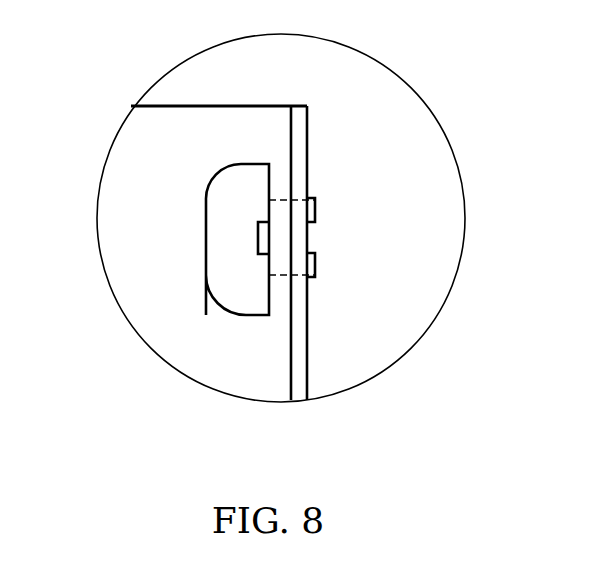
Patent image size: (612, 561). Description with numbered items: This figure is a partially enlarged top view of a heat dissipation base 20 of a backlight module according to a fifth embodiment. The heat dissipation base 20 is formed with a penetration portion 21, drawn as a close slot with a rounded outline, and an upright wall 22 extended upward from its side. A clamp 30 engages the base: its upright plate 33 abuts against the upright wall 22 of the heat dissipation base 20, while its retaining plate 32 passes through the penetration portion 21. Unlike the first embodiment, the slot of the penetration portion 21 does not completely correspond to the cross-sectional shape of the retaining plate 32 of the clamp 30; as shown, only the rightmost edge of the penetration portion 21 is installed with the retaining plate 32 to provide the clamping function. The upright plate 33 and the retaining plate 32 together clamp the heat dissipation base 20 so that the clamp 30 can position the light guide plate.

The heat dissipation base 20 is at (154, 334).
The penetration portion 21 is at (226, 198).
The upright wall 22 is at (298, 121).
The clamp 30 is at (336, 208).
The retaining plate 32 is at (258, 238).
The upright plate 33 is at (316, 262).